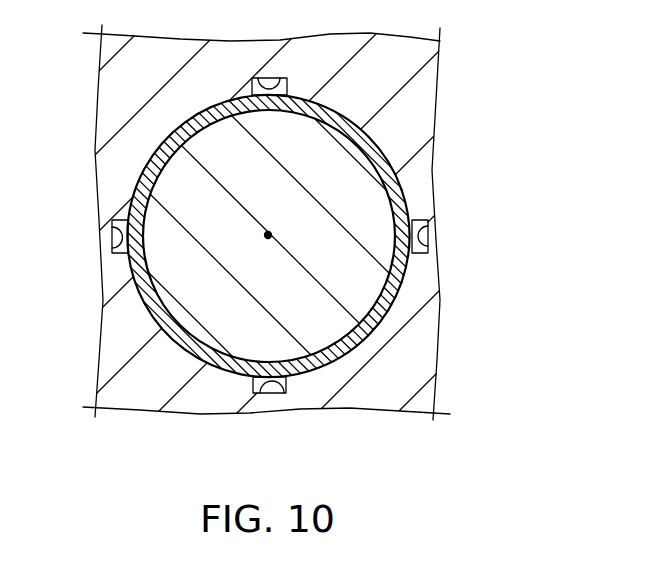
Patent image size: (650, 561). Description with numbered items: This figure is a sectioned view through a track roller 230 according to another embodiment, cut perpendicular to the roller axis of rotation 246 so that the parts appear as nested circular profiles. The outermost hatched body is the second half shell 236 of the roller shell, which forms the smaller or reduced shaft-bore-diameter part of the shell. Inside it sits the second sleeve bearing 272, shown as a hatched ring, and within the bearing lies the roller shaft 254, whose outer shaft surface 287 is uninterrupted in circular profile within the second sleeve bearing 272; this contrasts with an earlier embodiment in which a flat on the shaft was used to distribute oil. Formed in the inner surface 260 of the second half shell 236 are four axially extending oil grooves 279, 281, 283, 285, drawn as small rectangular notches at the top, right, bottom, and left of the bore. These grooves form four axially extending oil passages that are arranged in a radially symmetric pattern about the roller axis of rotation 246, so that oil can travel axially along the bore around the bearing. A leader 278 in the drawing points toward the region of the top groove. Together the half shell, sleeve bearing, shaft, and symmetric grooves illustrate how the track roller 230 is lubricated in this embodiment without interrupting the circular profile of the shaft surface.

The track roller 230 is at (295, 242).
The second half shell 236 is at (415, 88).
The roller axis of rotation 246 is at (267, 248).
The roller shaft 254 is at (320, 327).
The inner surface 260 is at (140, 178).
The second sleeve bearing 272 is at (410, 262).
The top tab 278 is at (292, 72).
The axially extending oil groove 279 is at (254, 90).
The axially extending oil groove 281 is at (422, 240).
The axially extending oil groove 283 is at (286, 393).
The axially extending oil groove 285 is at (113, 252).
The outer shaft surface 287 is at (364, 144).